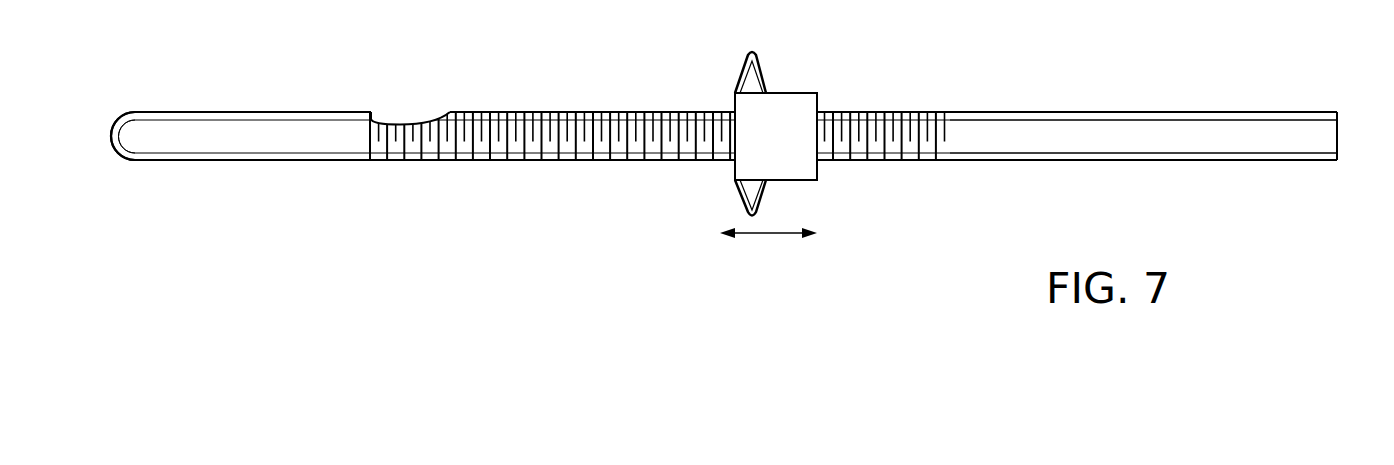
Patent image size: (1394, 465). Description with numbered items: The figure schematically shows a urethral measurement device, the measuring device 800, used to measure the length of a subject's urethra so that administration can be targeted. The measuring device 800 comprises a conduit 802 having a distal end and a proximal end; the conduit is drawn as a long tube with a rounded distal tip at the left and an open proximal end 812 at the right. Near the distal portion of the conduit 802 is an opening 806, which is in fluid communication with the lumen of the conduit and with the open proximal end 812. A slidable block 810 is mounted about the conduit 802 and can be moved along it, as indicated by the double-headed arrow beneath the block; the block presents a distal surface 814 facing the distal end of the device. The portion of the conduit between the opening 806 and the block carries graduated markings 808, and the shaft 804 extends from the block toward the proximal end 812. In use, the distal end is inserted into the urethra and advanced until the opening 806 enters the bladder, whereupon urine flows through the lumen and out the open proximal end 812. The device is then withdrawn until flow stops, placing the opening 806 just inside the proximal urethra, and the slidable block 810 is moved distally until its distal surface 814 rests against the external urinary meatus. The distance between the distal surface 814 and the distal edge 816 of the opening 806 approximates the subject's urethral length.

The measuring device 800 is at (448, 187).
The conduit 802 is at (241, 141).
The shaft 804 is at (1117, 123).
The opening 806 is at (409, 103).
The graduated markings 808 is at (650, 100).
The slidable block 810 is at (787, 93).
The proximal end 812 is at (1338, 125).
The distal surface 814 is at (733, 140).
The distal edge 816 is at (372, 110).